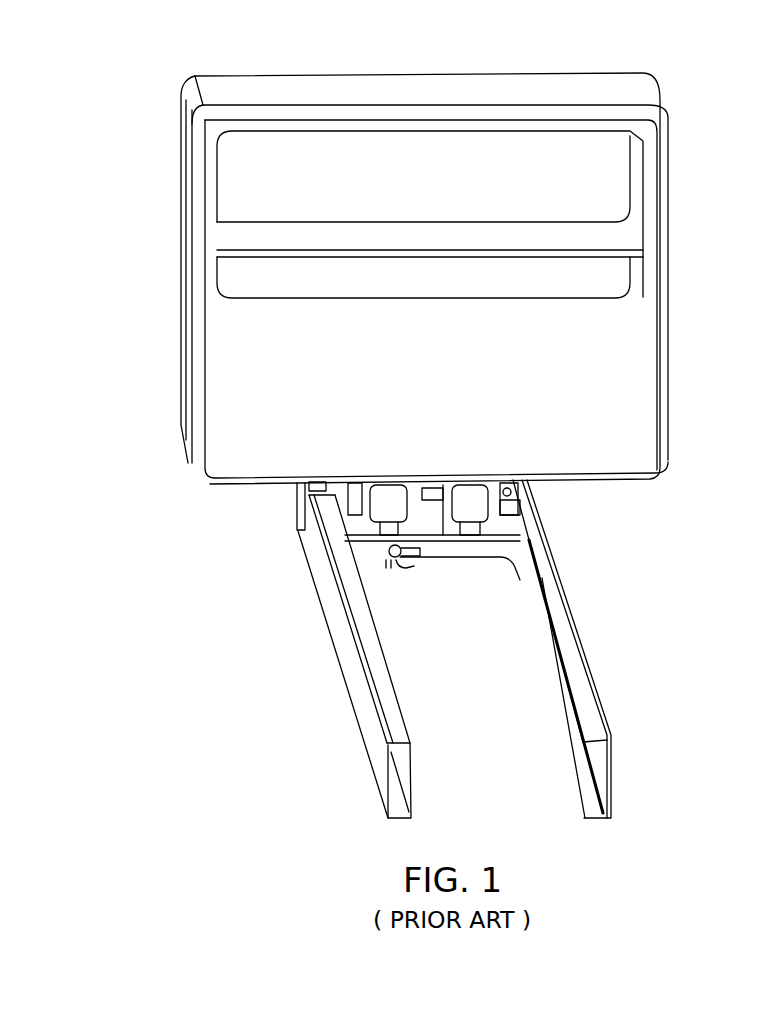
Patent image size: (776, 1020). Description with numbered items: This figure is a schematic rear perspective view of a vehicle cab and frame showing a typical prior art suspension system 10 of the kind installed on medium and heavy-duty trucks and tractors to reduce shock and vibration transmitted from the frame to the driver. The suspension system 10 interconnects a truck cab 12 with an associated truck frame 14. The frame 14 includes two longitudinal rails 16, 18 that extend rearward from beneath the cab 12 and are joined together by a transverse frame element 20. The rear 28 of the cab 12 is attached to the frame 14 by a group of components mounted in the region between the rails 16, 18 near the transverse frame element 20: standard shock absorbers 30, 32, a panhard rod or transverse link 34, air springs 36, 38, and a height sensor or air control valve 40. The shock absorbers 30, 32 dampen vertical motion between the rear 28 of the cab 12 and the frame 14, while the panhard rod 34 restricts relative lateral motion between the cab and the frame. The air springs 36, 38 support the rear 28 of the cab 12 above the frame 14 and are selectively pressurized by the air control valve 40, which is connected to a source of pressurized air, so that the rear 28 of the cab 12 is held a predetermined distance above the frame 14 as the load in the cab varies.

The suspension system 10 is at (563, 585).
The truck cab 12 is at (632, 333).
The truck frame 14 is at (347, 656).
The rail 16 is at (341, 683).
The rail 18 is at (592, 724).
The transverse frame element 20 is at (470, 558).
The rear of the cab 28 is at (612, 434).
The shock absorber 30 is at (355, 497).
The shock absorber 32 is at (512, 506).
The panhard rod 34 is at (470, 495).
The air spring 36 is at (390, 500).
The air spring 38 is at (506, 485).
The air control valve 40 is at (389, 551).